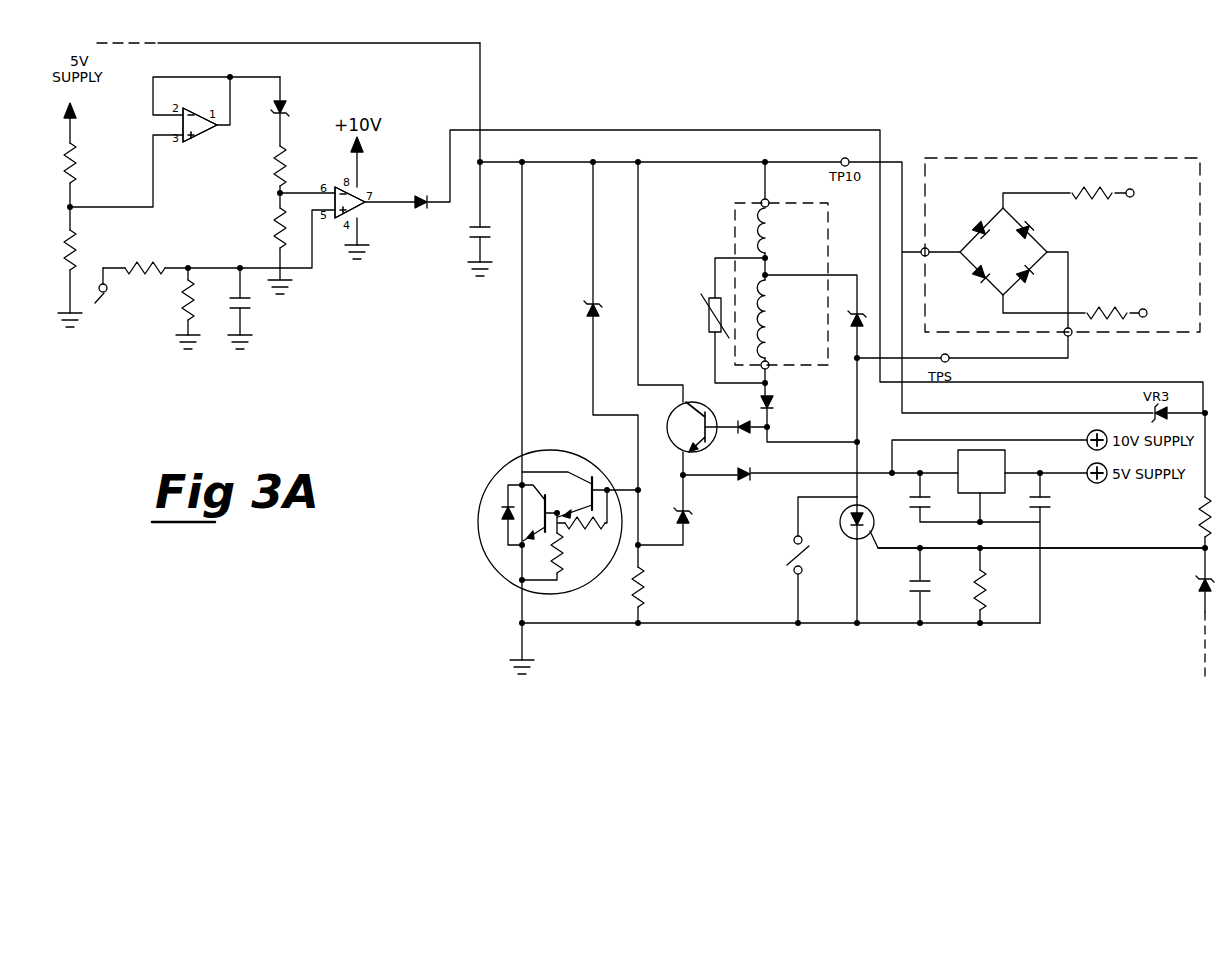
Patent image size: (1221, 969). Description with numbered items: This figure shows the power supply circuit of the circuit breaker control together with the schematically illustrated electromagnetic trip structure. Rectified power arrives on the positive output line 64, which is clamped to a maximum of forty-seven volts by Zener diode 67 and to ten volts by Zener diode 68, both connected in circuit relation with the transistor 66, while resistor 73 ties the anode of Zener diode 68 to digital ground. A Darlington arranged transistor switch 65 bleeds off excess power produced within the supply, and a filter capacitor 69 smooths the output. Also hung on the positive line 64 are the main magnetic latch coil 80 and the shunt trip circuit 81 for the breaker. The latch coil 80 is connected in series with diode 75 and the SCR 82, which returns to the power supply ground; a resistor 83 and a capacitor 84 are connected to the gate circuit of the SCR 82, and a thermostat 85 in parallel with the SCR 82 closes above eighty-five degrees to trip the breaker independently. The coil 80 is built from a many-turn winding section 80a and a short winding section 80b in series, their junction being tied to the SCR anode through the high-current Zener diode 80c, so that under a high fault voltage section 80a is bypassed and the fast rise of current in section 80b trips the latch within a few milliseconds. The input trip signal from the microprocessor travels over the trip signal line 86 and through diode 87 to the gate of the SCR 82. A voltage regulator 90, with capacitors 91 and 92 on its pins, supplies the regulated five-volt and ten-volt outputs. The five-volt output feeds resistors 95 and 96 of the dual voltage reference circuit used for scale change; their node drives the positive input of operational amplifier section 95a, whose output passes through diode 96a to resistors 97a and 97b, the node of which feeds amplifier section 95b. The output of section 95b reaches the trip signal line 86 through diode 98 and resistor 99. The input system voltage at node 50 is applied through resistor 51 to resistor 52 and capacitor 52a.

The positive output line 64 is at (393, 43).
The resistor 95 is at (76, 170).
The resistor 96 is at (78, 257).
The diode 96a is at (288, 110).
The operational amplifier section 95a is at (198, 134).
The resistor 97a is at (274, 170).
The resistor 97b is at (276, 223).
The operational amplifier section 95b is at (358, 209).
The diode 98 is at (423, 199).
The filter capacitor 69 is at (470, 238).
The node 50 is at (84, 299).
The resistor 51 is at (154, 280).
The resistor 52 is at (181, 320).
The capacitor 52a is at (252, 307).
The Zener diode 67 is at (586, 308).
The Darlington arranged transistor switch 65 is at (576, 451).
The resistor 73 is at (648, 586).
The transistor 66 is at (702, 400).
The Zener diode 68 is at (694, 517).
The diode 75 is at (775, 405).
The main magnetic latch coil 80 is at (748, 185).
The winding section 80a is at (770, 331).
The winding section 80b is at (771, 242).
The Zener diode 80c is at (862, 300).
The shunt trip circuit 81 is at (1065, 158).
The voltage regulator 90 is at (1005, 465).
The capacitor 91 is at (925, 506).
The capacitor 92 is at (1047, 507).
The resistor 99 is at (1195, 518).
The trip signal line 86 is at (1164, 553).
The diode 87 is at (1196, 584).
The SCR 82 is at (849, 544).
The thermostat 85 is at (786, 560).
The capacitor 84 is at (912, 588).
The resistor 83 is at (988, 590).